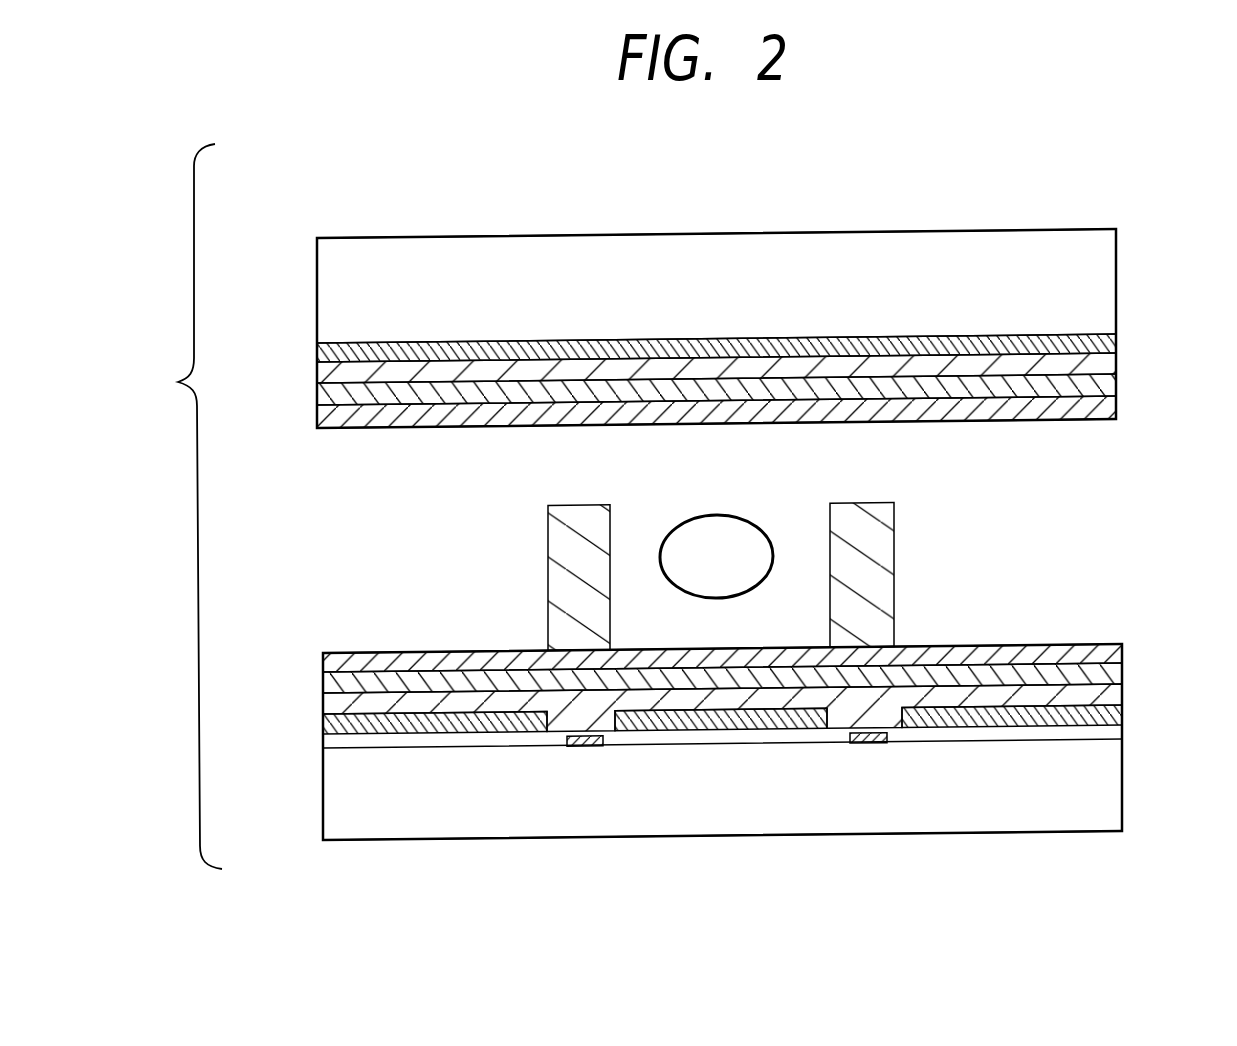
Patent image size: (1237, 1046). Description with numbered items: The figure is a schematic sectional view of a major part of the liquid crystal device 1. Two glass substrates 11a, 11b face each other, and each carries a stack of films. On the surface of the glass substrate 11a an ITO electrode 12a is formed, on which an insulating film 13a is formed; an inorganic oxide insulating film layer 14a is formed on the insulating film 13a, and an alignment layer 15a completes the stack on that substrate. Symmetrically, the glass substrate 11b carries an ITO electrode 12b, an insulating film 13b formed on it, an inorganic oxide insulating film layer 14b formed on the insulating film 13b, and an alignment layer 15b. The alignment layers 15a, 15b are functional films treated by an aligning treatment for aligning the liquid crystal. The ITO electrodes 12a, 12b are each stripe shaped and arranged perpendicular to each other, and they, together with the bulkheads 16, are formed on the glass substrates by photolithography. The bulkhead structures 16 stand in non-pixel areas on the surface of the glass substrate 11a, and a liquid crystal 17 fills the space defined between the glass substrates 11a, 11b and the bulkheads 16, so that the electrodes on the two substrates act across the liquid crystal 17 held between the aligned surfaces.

The liquid crystal device 1 is at (982, 197).
The glass substrate 11a is at (1103, 257).
The ITO electrode 12a is at (1113, 345).
The insulating film 13a is at (1112, 368).
The inorganic oxide insulating film layer 14a is at (1112, 388).
The alignment layer 15a is at (1115, 407).
The glass substrate 11b is at (1110, 792).
The ITO electrode 12b is at (1122, 718).
The insulating film 13b is at (1118, 697).
The inorganic oxide insulating film layer 14b is at (1122, 673).
The alignment layer 15b is at (1122, 652).
The bulkhead structure 16 is at (552, 569).
The liquid crystal 17 is at (748, 522).